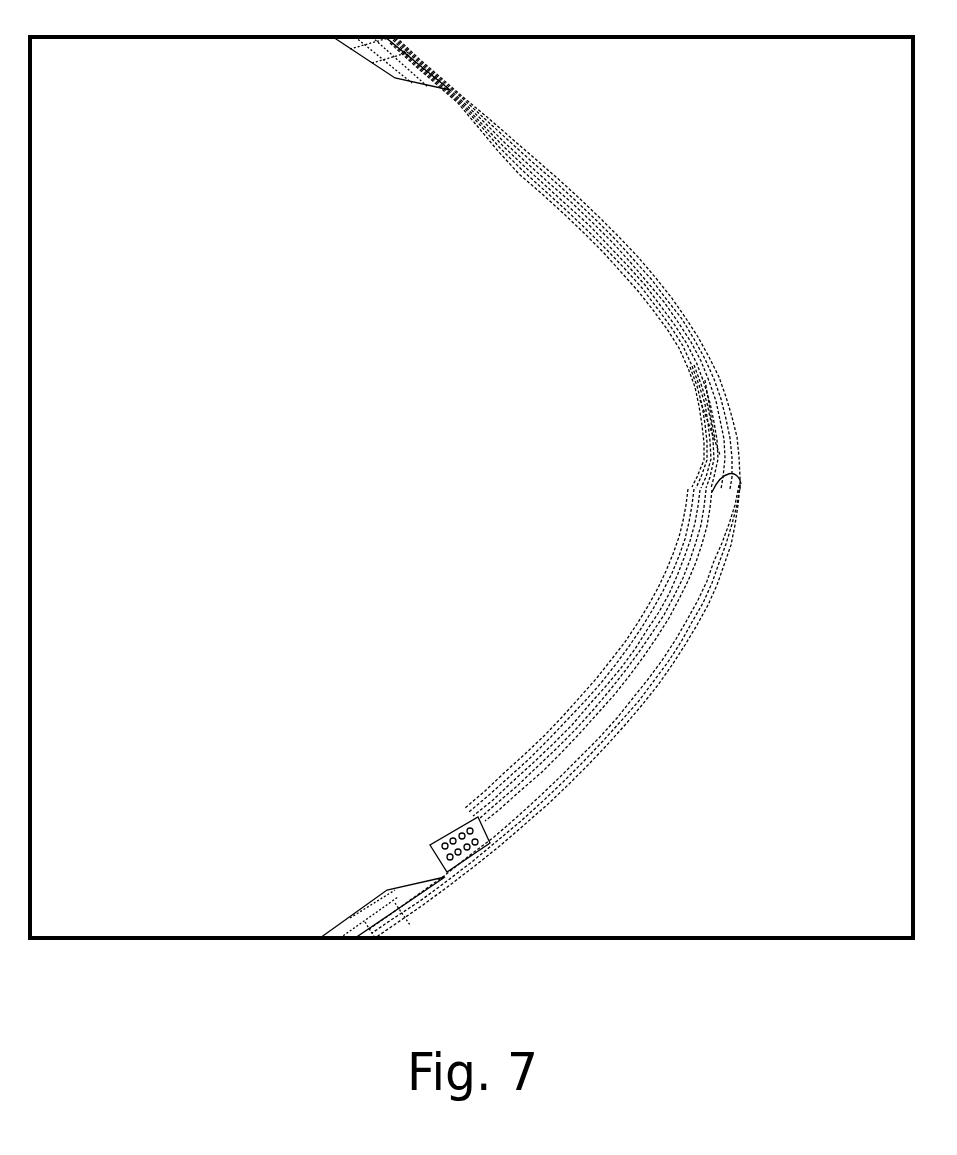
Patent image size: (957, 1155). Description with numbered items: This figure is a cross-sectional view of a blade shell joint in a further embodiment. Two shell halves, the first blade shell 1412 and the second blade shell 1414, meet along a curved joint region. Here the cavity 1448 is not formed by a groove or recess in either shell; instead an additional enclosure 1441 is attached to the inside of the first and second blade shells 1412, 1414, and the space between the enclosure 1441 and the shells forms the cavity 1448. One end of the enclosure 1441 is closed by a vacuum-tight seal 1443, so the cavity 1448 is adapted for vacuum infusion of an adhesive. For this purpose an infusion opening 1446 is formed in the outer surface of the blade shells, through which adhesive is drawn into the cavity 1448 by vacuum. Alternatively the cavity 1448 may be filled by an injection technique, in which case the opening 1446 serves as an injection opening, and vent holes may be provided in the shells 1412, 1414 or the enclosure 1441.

The second blade shell 1414 is at (452, 90).
The enclosure 1441 is at (700, 397).
The infusion opening 1446 is at (752, 481).
The cavity 1448 is at (660, 638).
The vacuum-tight seal 1443 is at (460, 828).
The first blade shell 1412 is at (438, 879).